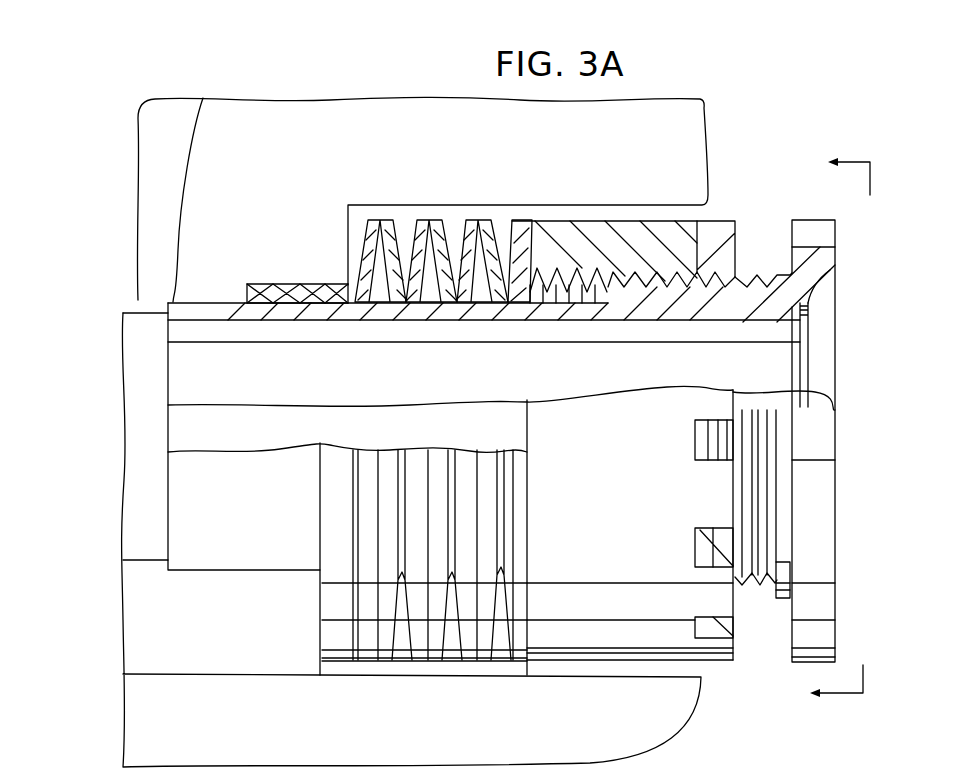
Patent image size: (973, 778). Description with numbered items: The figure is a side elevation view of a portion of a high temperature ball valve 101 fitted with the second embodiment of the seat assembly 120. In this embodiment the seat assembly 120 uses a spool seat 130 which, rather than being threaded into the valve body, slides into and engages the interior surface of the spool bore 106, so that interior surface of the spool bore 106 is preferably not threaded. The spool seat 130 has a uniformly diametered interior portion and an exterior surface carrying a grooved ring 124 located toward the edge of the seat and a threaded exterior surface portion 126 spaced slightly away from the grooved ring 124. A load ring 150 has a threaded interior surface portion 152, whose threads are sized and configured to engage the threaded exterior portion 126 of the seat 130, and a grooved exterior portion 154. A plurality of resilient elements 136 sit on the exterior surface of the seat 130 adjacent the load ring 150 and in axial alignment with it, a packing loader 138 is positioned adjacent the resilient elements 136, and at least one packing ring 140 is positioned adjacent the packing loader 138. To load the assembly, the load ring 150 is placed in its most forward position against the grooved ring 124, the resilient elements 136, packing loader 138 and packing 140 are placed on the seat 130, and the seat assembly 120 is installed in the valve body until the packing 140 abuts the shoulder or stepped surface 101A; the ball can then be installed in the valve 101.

The high temperature valve 101 is at (897, 201).
The shoulder or stepped surface 101A is at (243, 300).
The spool bore 106 is at (190, 98).
The seat assembly 120 is at (708, 216).
The grooved ring 124 is at (826, 500).
The threaded exterior surface portion 126 is at (770, 580).
The spool seat 130 is at (780, 367).
The resilient elements 136 is at (385, 265).
The packing loader 138 is at (338, 286).
The packing ring 140 is at (318, 286).
The load ring 150 is at (633, 610).
The threaded interior surface portion 152 is at (562, 283).
The grooved exterior portion 154 is at (717, 440).